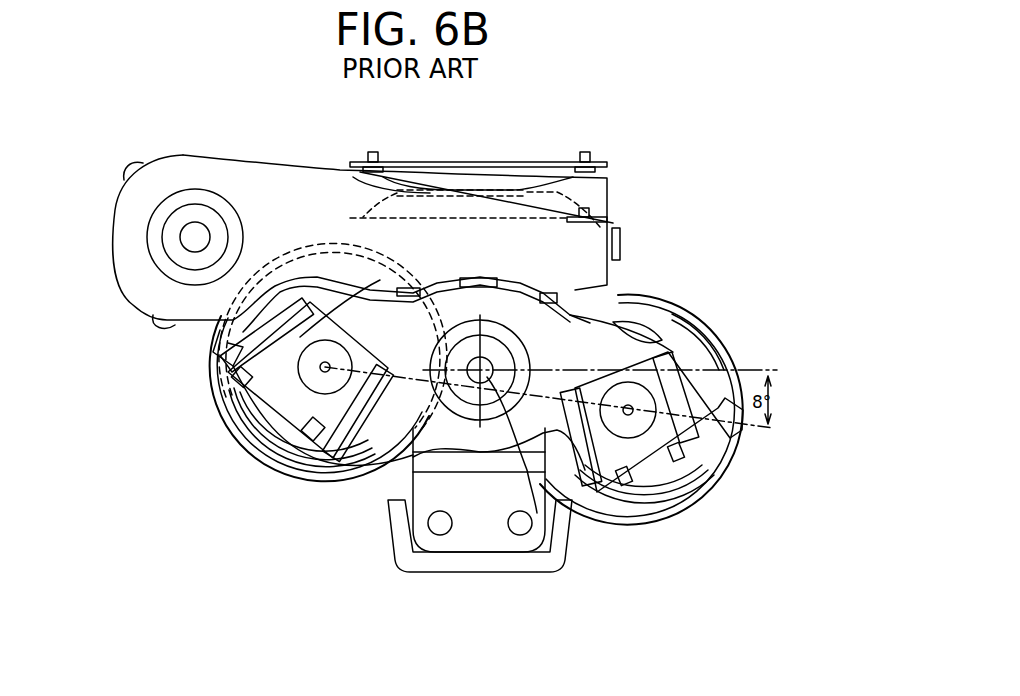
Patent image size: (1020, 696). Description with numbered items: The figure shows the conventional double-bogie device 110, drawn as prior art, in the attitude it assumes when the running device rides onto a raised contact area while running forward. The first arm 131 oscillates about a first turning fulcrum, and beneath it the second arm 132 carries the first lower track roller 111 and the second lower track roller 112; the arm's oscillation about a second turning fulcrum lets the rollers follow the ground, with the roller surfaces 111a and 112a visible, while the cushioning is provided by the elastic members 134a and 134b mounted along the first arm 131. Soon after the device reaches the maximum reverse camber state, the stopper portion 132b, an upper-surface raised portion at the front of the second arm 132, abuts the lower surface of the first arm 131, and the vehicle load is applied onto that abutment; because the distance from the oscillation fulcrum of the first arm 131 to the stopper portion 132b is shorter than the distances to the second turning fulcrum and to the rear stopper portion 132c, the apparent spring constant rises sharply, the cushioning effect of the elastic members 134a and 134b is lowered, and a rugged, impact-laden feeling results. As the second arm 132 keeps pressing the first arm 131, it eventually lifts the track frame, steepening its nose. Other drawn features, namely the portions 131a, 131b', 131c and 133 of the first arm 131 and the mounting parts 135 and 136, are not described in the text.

The conventional double-bogie device 110 is at (636, 148).
The first lower track roller 111 is at (257, 466).
The first pulley groove 111a is at (253, 440).
The second lower track roller 112 is at (698, 505).
The second pulley groove 112a is at (703, 480).
The first arm 131 is at (481, 240).
The body mounting portion 131a is at (477, 520).
The phantom pulley position 131b' is at (333, 275).
The body side wall 131c is at (613, 227).
The second arm 132 is at (403, 463).
The stopper portion 132b is at (231, 326).
The stopper portion 132c is at (670, 335).
The pivot boss 133 is at (192, 238).
The elastic member 134a is at (580, 210).
The elastic member 134b is at (582, 184).
The mounting bracket 135 is at (547, 523).
The bracket flange 136 is at (400, 520).